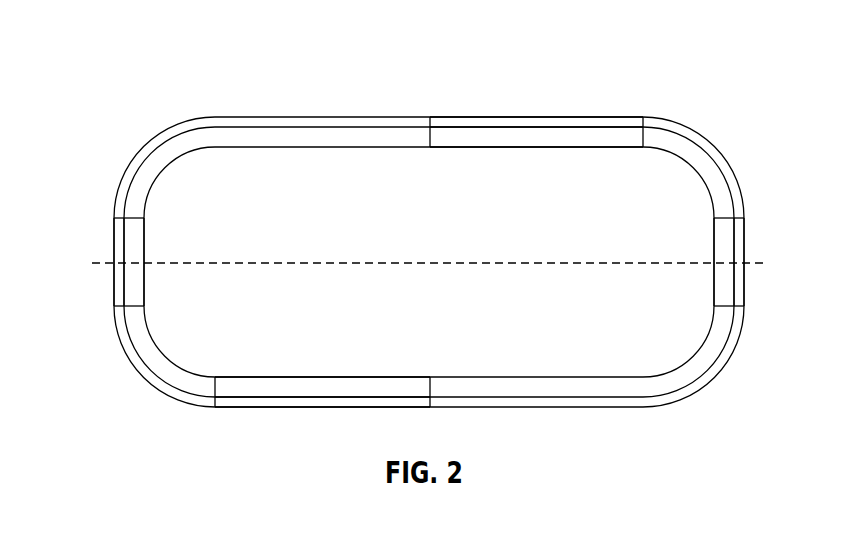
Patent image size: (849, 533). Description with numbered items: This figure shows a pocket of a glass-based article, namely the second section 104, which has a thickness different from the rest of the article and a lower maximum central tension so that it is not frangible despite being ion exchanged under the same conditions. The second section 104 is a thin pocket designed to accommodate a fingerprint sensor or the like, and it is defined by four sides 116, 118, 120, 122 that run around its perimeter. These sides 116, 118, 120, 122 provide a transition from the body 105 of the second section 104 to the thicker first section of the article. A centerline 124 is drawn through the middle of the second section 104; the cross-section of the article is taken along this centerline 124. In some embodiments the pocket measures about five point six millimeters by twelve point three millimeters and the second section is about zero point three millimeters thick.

The second section 104 is at (296, 72).
The body 105 is at (423, 216).
The side 116 is at (100, 288).
The side 118 is at (760, 296).
The side 120 is at (556, 102).
The side 122 is at (299, 419).
The centerline 124 is at (723, 262).